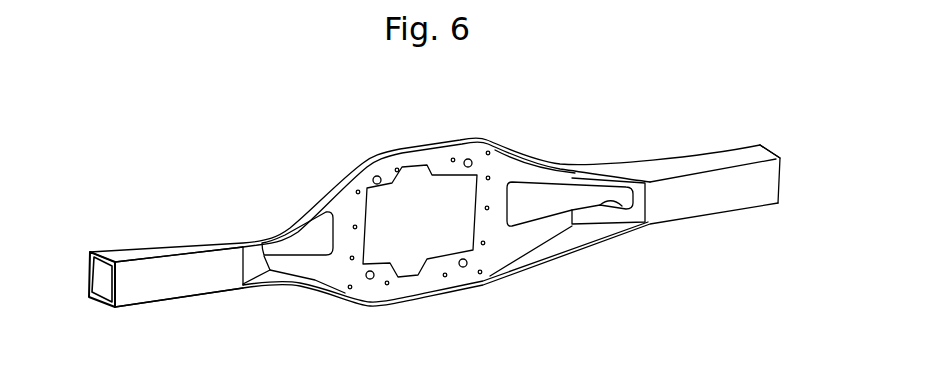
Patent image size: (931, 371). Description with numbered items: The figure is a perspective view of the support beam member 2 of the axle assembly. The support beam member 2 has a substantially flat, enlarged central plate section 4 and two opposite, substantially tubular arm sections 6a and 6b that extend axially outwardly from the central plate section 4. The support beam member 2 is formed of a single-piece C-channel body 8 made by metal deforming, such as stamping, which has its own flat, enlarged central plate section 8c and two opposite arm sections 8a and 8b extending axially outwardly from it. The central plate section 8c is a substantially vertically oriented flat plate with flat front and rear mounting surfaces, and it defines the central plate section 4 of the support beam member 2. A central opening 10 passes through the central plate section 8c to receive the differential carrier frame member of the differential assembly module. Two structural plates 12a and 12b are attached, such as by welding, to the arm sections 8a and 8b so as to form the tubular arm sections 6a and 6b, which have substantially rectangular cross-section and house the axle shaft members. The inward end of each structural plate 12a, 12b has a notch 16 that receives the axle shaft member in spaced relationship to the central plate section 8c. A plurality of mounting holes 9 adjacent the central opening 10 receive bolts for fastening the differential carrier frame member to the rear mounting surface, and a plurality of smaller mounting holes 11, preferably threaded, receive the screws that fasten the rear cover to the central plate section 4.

The support beam member 2 is at (551, 125).
The central plate section 4 is at (414, 141).
The tubular arm section 6a is at (706, 145).
The tubular arm section 6b is at (141, 235).
The C-channel body 8 is at (530, 277).
The arm section 8a is at (742, 148).
The arm section 8b is at (100, 280).
The central plate section 8c is at (437, 276).
The mounting holes 9 is at (377, 176).
The central opening 10 is at (473, 208).
The smaller mounting holes 11 is at (488, 151).
The structural plate 12a is at (728, 198).
The structural plate 12b is at (168, 285).
The notch 16 is at (625, 208).